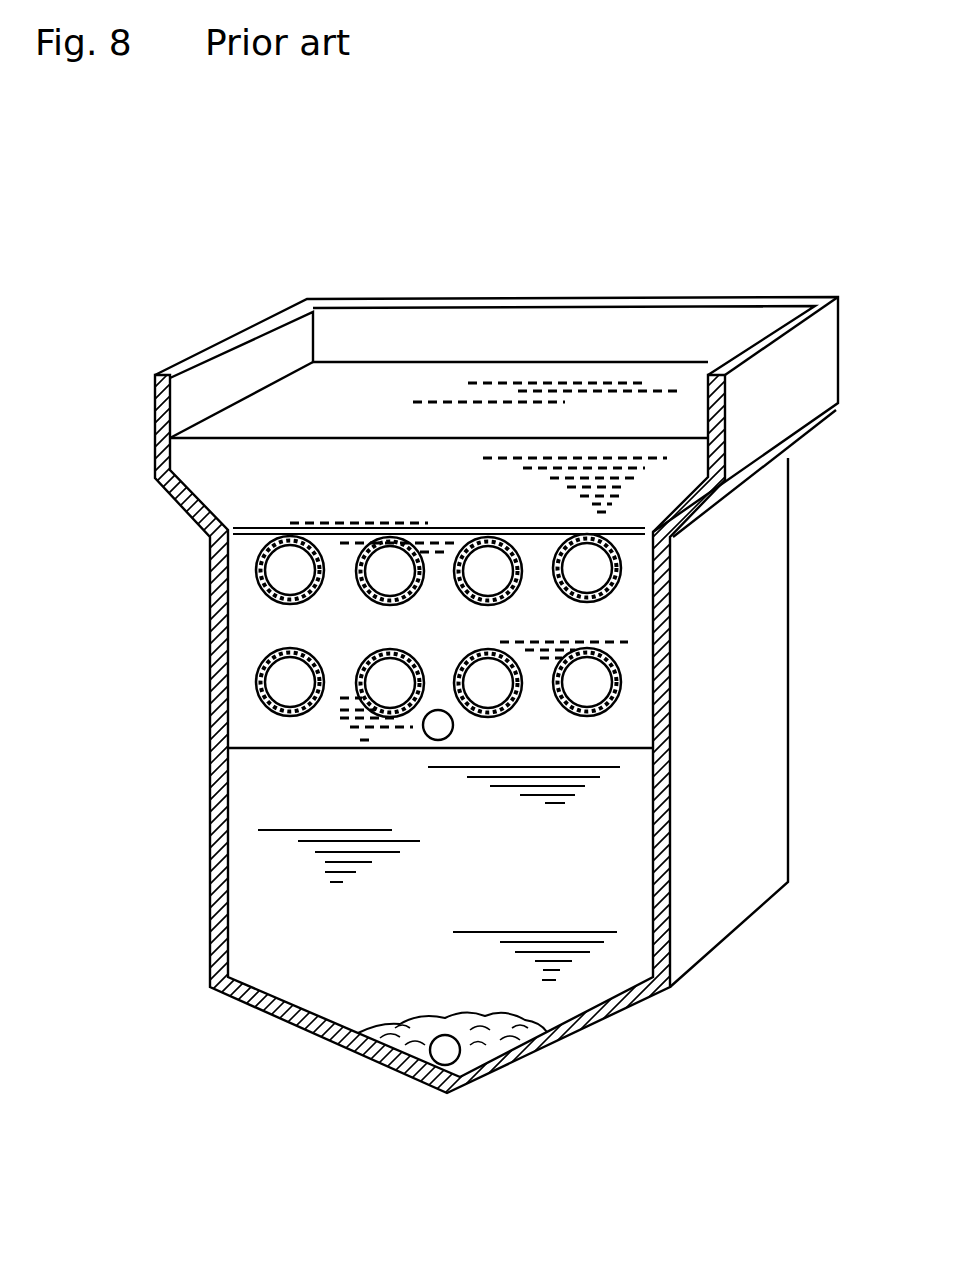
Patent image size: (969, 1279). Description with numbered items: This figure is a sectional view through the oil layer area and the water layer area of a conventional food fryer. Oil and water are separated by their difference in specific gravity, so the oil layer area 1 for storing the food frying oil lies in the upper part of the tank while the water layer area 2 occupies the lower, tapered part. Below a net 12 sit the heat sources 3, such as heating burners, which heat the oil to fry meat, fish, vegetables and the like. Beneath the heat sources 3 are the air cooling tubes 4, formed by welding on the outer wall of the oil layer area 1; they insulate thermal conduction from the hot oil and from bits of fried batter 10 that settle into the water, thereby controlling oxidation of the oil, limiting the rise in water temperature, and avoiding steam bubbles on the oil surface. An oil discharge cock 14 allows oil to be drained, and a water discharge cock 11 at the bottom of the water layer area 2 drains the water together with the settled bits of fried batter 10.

The oil layer area 1 is at (215, 482).
The water layer area 2 is at (255, 858).
The heat source 3 is at (253, 573).
The air cooling tube 4 is at (257, 675).
The bits of fried batter 10 is at (396, 1058).
The water discharge cock 11 is at (452, 1060).
The net 12 is at (250, 532).
The oil discharge cock 14 is at (430, 735).